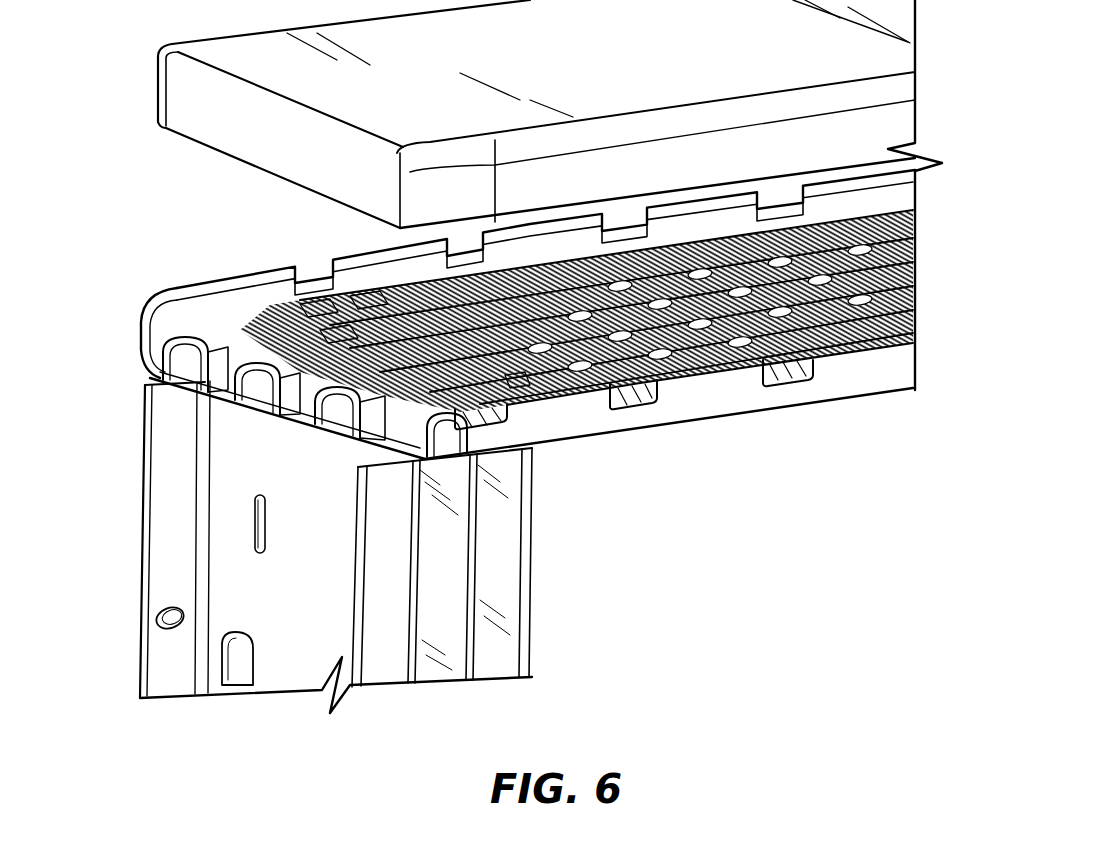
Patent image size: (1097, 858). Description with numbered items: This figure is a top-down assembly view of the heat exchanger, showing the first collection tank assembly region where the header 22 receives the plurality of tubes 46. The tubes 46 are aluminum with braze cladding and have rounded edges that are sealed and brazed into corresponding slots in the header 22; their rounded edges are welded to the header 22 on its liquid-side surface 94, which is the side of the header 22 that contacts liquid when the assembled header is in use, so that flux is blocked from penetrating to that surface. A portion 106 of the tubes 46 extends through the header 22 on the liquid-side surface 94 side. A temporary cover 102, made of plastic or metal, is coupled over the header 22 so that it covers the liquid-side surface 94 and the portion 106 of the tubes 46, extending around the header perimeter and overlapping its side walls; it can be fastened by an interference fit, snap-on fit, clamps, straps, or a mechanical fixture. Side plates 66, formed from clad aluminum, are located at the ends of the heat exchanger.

The temporary cover 102 is at (190, 102).
The portion of the tubes 106 is at (360, 350).
The header 22 is at (686, 402).
The tubes 46 is at (468, 422).
The liquid-side surface 94 is at (468, 425).
The side plates 66 is at (245, 587).